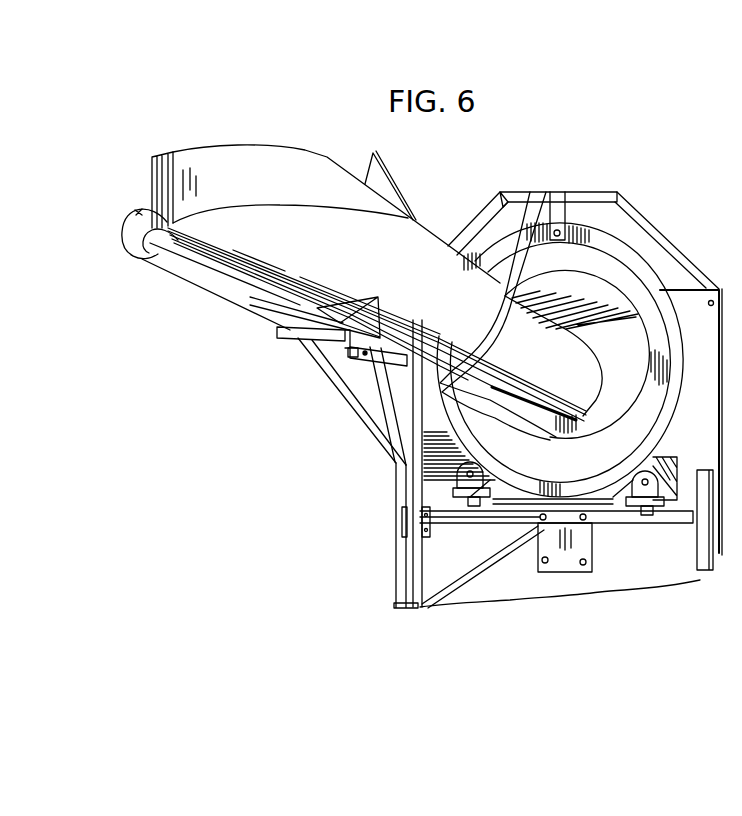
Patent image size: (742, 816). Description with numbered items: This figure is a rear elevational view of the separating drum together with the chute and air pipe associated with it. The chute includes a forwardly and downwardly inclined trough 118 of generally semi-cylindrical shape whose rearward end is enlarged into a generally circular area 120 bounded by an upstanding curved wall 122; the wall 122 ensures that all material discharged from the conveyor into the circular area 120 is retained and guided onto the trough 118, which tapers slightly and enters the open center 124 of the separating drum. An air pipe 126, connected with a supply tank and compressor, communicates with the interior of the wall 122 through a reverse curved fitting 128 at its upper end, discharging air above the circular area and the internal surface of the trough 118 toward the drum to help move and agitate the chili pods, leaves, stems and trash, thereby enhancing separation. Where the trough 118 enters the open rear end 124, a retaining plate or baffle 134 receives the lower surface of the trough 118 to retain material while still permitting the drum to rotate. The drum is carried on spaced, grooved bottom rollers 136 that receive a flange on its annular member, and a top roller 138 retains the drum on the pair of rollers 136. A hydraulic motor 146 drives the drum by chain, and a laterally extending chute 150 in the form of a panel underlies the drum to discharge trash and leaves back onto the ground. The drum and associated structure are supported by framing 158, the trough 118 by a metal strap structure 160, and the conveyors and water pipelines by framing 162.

The trough 118 is at (428, 252).
The circular area 120 is at (227, 240).
The upstanding curved wall 122 is at (230, 172).
The open center 124 is at (593, 282).
The air pipe 126 is at (177, 270).
The reverse curved fitting 128 is at (140, 207).
The retaining plate or baffle 134 is at (623, 327).
The bottom rollers 136 is at (657, 447).
The top roller 138 is at (577, 217).
The hydraulic motor 146 is at (627, 522).
The laterally extending chute 150 is at (480, 567).
The framing 158 is at (673, 522).
The metal strap structure 160 is at (526, 217).
The framing 162 is at (317, 340).